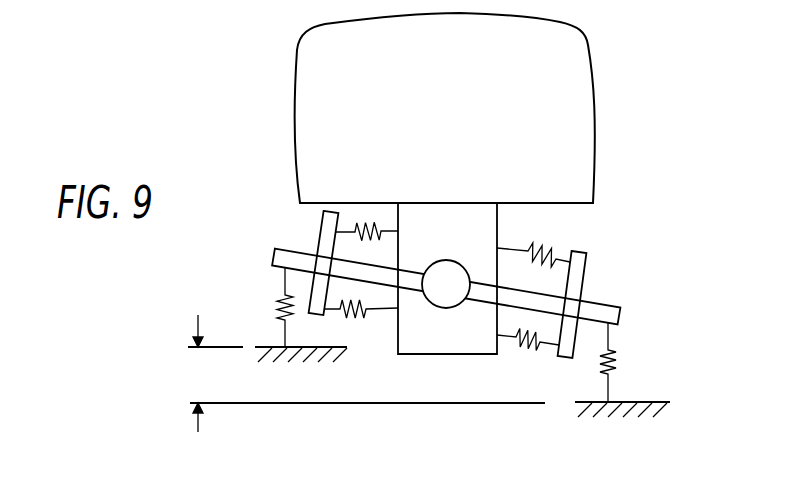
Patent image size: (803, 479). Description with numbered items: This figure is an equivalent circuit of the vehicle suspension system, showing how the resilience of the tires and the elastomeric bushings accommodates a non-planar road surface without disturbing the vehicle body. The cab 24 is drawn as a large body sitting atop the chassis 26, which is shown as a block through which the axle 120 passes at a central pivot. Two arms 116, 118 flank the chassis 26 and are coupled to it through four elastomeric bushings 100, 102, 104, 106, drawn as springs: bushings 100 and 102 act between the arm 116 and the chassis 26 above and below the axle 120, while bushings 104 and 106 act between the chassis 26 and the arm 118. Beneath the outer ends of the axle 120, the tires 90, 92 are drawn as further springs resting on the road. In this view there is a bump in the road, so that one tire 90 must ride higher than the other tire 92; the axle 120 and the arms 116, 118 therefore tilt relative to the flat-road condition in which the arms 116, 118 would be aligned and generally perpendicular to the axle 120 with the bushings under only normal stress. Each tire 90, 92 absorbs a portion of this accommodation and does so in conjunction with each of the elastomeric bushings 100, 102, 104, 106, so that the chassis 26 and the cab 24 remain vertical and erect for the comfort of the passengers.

The cab 24 is at (588, 42).
The chassis 26 is at (447, 355).
The tire 90 is at (277, 305).
The tire 92 is at (618, 362).
The elastomeric bushing 100 is at (368, 222).
The elastomeric bushing 102 is at (360, 320).
The elastomeric bushing 104 is at (540, 246).
The elastomeric bushing 106 is at (530, 348).
The arm 116 is at (318, 230).
The arm 118 is at (587, 280).
The axle 120 is at (408, 276).